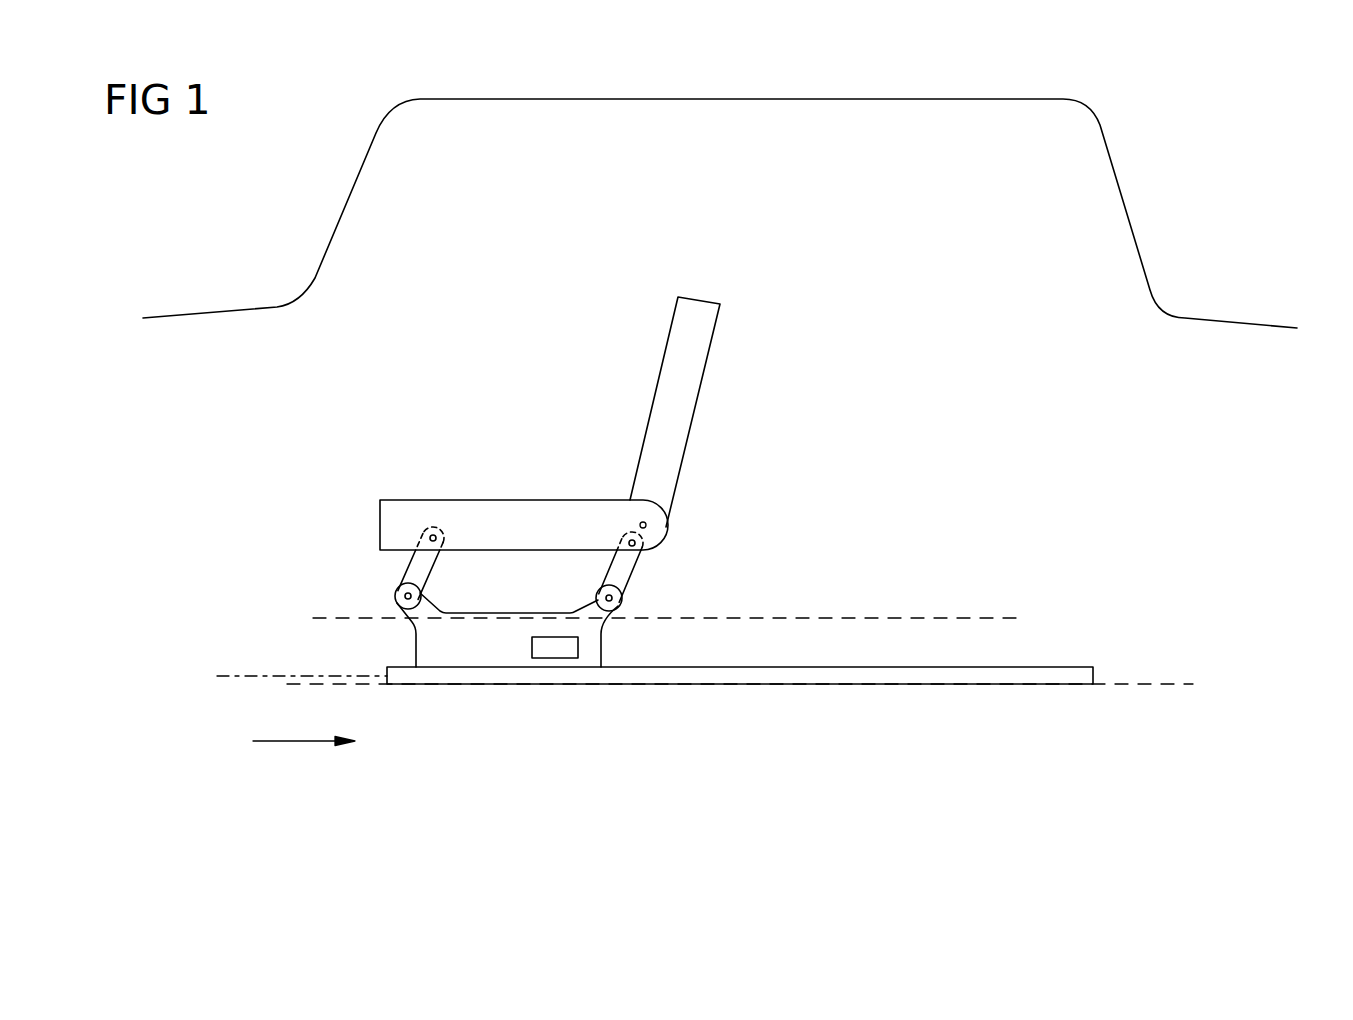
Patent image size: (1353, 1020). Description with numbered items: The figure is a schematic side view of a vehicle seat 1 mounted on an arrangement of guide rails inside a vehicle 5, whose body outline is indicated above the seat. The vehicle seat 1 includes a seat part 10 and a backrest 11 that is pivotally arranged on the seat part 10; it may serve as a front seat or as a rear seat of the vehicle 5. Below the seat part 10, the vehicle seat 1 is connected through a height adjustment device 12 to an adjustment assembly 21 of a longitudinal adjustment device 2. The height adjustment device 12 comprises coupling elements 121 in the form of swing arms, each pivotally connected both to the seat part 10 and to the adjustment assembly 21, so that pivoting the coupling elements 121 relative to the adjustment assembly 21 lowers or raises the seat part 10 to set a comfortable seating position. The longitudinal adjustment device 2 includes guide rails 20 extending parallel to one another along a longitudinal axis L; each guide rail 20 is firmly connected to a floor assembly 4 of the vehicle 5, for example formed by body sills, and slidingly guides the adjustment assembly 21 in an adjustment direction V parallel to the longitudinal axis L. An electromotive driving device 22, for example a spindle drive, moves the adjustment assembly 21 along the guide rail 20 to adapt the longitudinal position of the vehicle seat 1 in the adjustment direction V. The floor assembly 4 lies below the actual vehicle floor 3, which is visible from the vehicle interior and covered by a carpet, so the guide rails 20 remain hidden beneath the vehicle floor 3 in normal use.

The vehicle seat 1 is at (612, 298).
The longitudinal adjustment device 2 is at (419, 715).
The vehicle floor 3 is at (962, 618).
The floor assembly 4 is at (1148, 683).
The vehicle 5 is at (863, 269).
The seat part 10 is at (503, 515).
The backrest 11 is at (668, 425).
The height adjustment device 12 is at (345, 563).
The coupling element 121 is at (620, 575).
The guide rail 20 is at (680, 684).
The adjustment assembly 21 is at (602, 645).
The electromotive driving device 22 is at (555, 650).
The longitudinal axis L is at (242, 675).
The adjustment direction V is at (304, 756).